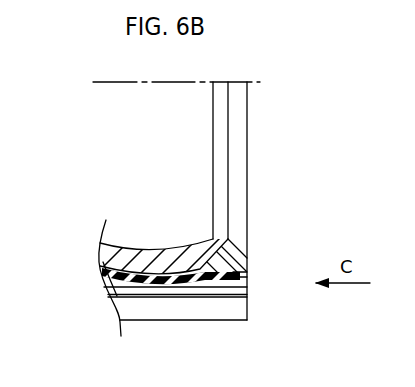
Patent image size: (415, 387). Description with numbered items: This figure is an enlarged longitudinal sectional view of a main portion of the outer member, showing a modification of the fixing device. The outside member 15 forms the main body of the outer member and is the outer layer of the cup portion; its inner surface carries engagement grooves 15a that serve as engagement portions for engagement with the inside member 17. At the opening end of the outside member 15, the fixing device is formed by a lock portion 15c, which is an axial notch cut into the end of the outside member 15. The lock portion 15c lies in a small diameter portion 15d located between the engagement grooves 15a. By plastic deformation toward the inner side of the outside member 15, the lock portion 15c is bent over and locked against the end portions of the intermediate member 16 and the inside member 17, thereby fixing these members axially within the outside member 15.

The outside member 15 is at (142, 296).
The engagement grooves 15a is at (248, 308).
The lock portion 15c is at (218, 283).
The small diameter portion 15d is at (248, 275).
The intermediate member 16 is at (100, 282).
The inside member 17 is at (98, 254).